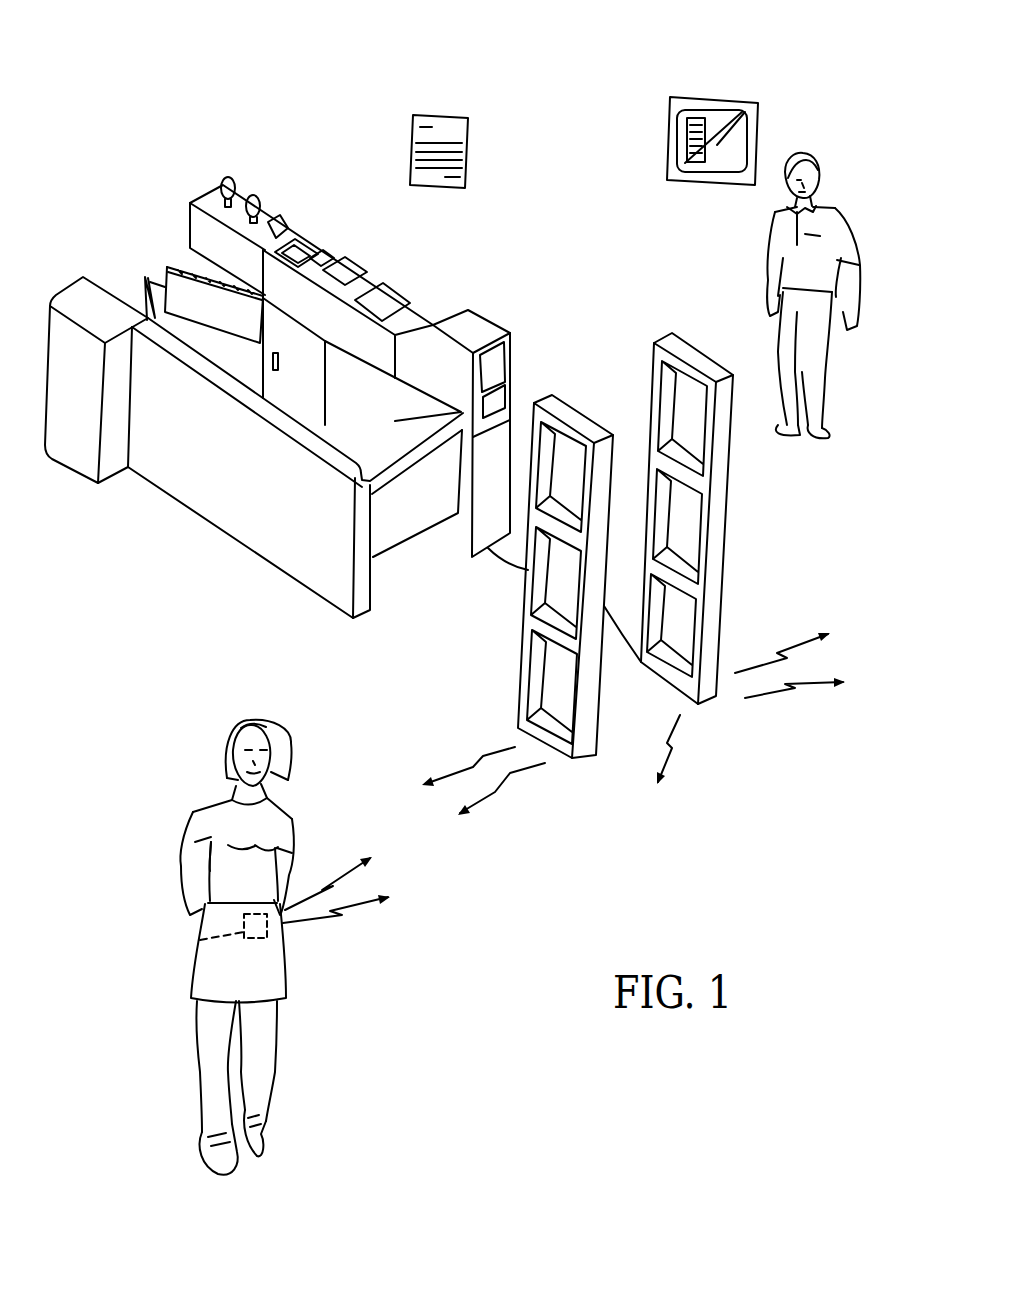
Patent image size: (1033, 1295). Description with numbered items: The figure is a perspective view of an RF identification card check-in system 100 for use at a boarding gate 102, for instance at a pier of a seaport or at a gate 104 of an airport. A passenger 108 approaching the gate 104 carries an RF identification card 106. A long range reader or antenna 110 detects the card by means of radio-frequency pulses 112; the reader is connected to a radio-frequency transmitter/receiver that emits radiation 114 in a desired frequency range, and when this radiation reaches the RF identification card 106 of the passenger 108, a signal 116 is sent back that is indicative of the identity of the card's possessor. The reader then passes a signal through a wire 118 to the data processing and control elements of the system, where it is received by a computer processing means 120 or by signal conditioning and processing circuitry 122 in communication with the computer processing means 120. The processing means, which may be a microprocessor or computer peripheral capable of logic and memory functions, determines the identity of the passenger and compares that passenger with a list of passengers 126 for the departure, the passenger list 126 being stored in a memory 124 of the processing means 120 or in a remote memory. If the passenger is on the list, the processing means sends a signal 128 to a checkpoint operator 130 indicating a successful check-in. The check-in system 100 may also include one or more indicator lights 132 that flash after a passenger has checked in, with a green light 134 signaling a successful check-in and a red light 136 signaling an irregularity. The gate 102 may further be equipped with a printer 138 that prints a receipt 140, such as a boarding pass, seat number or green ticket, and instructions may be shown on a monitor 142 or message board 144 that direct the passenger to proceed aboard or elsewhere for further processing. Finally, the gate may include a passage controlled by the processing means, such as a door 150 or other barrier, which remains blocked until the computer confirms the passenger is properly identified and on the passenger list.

The RF identification card check-in system 100 is at (608, 290).
The boarding gate 102 is at (78, 203).
The gate 104 is at (187, 218).
The RF identification card 106 is at (200, 940).
The passenger 108 is at (284, 741).
The long range reader or antenna 110 is at (523, 653).
The radio-frequency pulses 112 is at (487, 753).
The radiation 114 is at (790, 645).
The signal 116 is at (342, 872).
The wire 118 is at (615, 640).
The computer processing means 120 is at (388, 302).
The signal conditioning and processing circuitry 122 is at (354, 272).
The memory 124 is at (323, 258).
The list of passengers 126 is at (696, 117).
The signal 128 is at (433, 324).
The checkpoint operator 130 is at (778, 226).
The indicator lights 132 is at (235, 107).
The green light 134 is at (222, 177).
The red light 136 is at (248, 194).
The printer 138 is at (258, 246).
The receipt 140 is at (280, 216).
The monitor 142 is at (667, 140).
The message board 144 is at (410, 133).
The door 150 is at (178, 266).